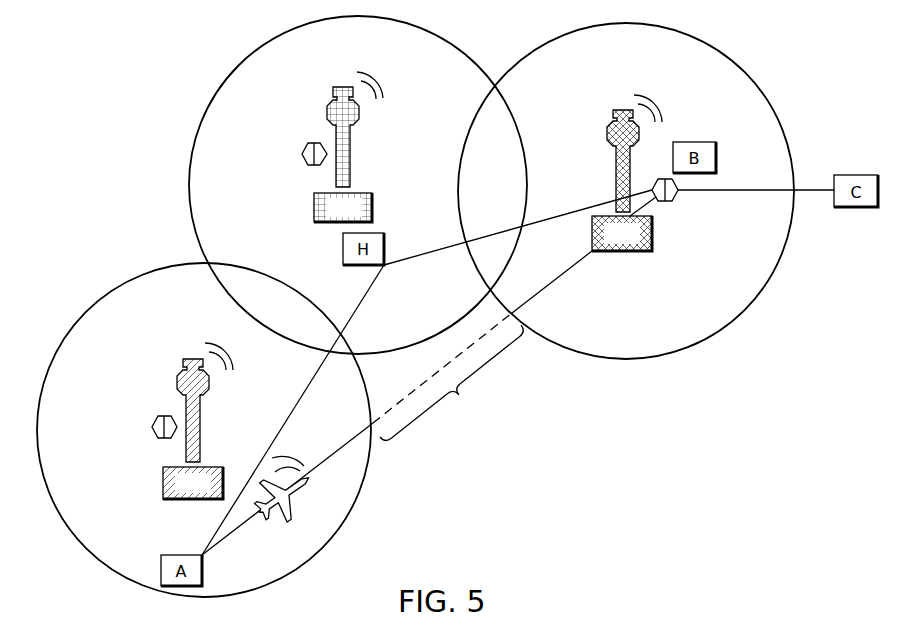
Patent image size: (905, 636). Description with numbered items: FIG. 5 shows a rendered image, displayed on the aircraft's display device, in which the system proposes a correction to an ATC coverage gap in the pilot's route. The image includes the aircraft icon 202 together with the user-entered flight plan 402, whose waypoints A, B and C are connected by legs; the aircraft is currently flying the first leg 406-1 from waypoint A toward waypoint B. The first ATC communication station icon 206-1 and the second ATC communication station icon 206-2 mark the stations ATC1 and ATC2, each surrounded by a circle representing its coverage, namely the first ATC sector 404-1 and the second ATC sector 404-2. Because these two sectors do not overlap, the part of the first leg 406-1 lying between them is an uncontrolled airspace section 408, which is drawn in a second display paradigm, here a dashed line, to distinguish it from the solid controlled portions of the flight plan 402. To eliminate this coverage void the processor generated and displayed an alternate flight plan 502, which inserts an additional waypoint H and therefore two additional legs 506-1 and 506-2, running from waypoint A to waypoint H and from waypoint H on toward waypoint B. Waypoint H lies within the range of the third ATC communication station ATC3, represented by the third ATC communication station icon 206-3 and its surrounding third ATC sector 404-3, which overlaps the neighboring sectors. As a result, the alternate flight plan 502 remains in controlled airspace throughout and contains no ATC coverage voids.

The third ATC sector 404-3 is at (250, 55).
The second ATC sector 404-2 is at (743, 70).
The first ATC sector 404-1 is at (91, 306).
The third ATC communication station icon 206-3 is at (328, 130).
The second ATC communication station icon 206-2 is at (607, 162).
The first ATC communication station icon 206-1 is at (177, 383).
The additional leg 506-1 is at (292, 412).
The additional leg 506-2 is at (424, 256).
The first leg 406-1 is at (336, 450).
The flight plan 402 is at (404, 406).
The uncontrolled airspace section 408 is at (459, 395).
The alternate flight plan 502 is at (300, 268).
The aircraft icon 202 is at (288, 528).